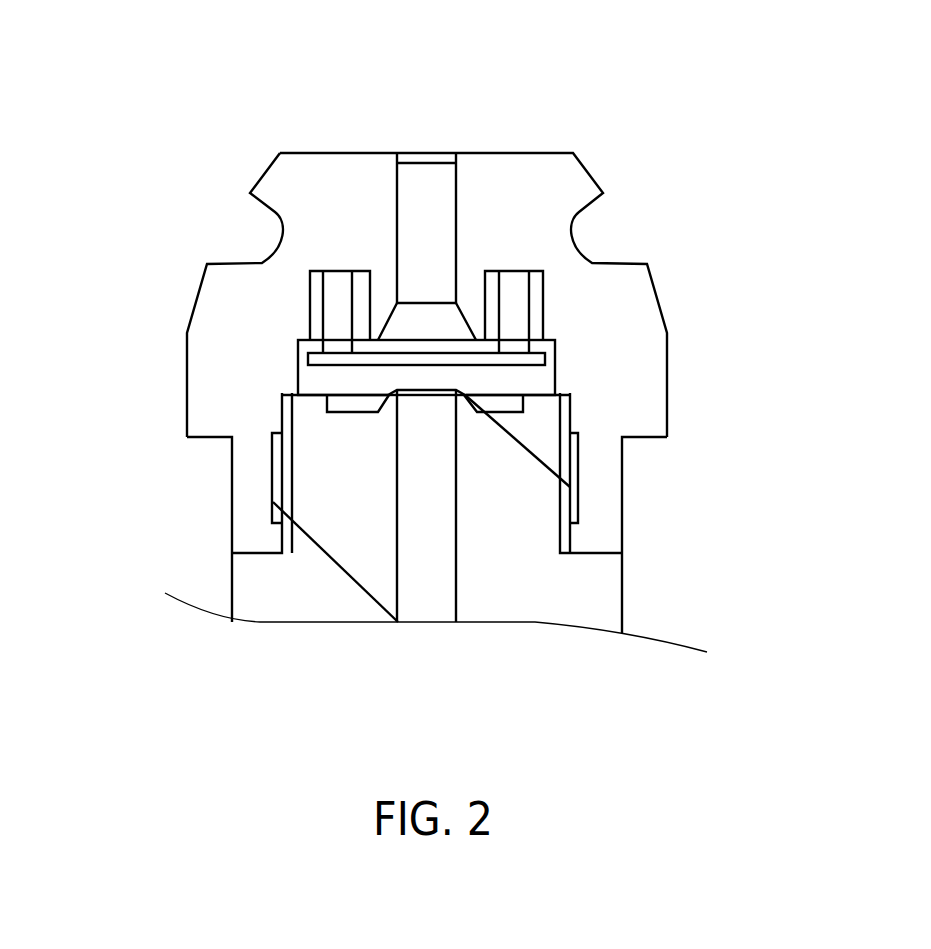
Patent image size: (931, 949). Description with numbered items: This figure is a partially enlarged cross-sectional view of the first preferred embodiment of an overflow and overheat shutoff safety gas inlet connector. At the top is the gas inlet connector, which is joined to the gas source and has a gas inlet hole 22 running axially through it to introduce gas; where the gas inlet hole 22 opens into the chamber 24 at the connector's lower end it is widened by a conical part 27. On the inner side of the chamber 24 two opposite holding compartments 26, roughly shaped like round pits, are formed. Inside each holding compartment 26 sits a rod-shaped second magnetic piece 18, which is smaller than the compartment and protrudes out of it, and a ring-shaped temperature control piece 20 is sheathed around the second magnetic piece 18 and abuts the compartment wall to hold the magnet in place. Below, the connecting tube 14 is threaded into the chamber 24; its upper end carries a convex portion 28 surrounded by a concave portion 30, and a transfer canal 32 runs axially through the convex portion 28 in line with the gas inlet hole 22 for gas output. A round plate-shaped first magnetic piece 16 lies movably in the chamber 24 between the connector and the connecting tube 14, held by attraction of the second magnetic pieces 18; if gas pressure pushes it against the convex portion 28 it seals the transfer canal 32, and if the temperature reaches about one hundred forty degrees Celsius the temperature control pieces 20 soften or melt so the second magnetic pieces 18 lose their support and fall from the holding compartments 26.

The connecting tube 14 is at (520, 510).
The first magnetic piece 16 is at (510, 358).
The second magnetic piece 18 is at (343, 287).
The temperature control piece 20 is at (549, 295).
The gas inlet hole 22 is at (423, 213).
The chamber 24 is at (337, 377).
The holding compartment 26 is at (308, 299).
The conical part 27 is at (420, 318).
The convex portion 28 is at (397, 390).
The concave portion 30 is at (350, 402).
The transfer canal 32 is at (428, 525).